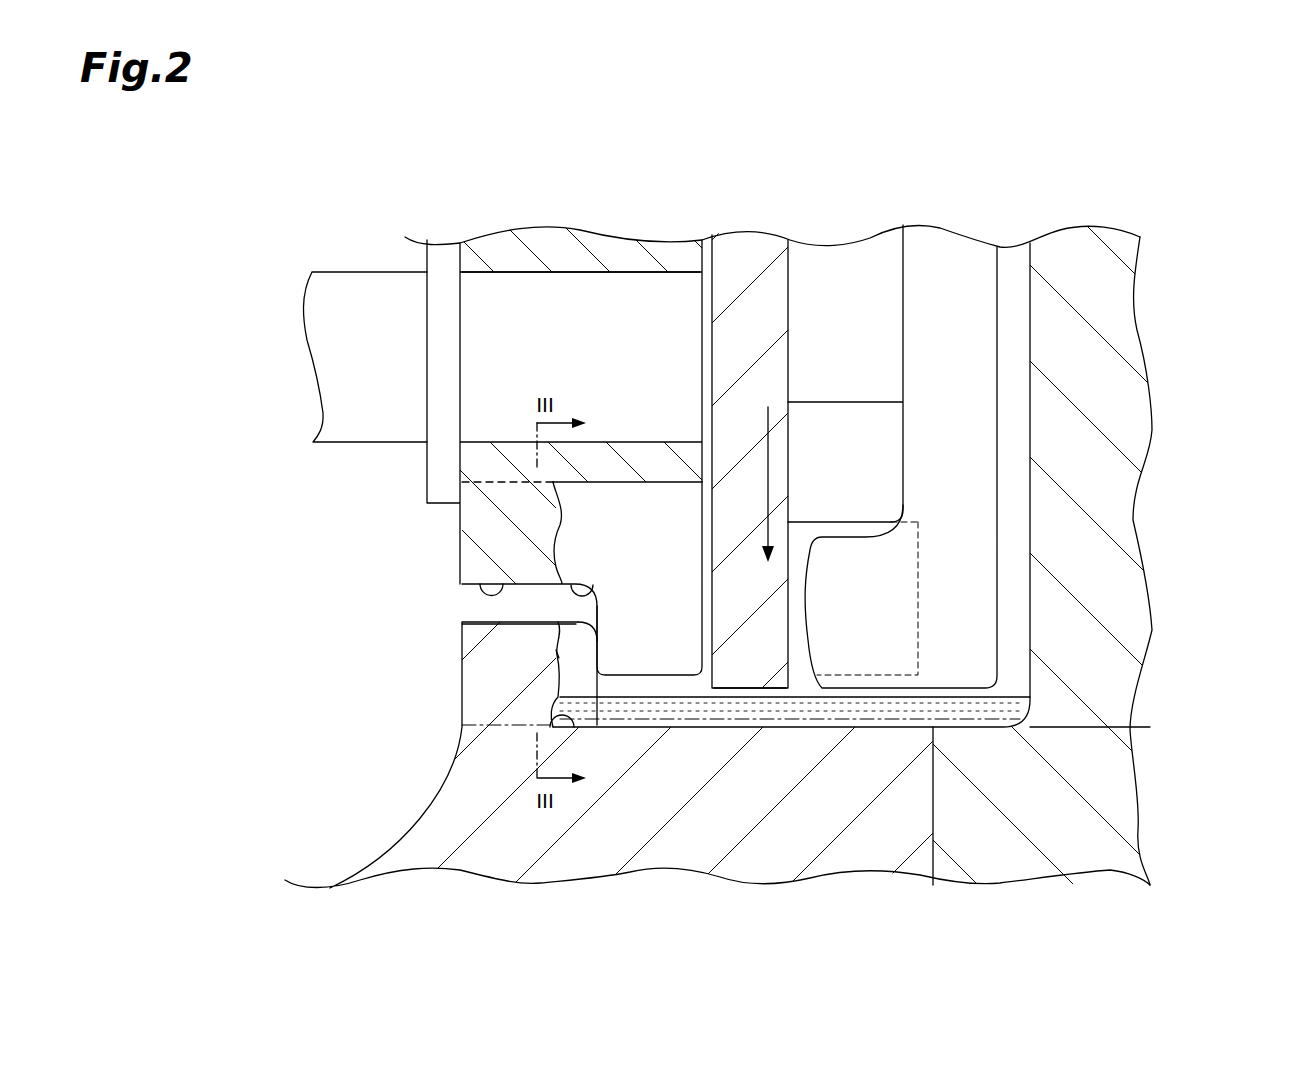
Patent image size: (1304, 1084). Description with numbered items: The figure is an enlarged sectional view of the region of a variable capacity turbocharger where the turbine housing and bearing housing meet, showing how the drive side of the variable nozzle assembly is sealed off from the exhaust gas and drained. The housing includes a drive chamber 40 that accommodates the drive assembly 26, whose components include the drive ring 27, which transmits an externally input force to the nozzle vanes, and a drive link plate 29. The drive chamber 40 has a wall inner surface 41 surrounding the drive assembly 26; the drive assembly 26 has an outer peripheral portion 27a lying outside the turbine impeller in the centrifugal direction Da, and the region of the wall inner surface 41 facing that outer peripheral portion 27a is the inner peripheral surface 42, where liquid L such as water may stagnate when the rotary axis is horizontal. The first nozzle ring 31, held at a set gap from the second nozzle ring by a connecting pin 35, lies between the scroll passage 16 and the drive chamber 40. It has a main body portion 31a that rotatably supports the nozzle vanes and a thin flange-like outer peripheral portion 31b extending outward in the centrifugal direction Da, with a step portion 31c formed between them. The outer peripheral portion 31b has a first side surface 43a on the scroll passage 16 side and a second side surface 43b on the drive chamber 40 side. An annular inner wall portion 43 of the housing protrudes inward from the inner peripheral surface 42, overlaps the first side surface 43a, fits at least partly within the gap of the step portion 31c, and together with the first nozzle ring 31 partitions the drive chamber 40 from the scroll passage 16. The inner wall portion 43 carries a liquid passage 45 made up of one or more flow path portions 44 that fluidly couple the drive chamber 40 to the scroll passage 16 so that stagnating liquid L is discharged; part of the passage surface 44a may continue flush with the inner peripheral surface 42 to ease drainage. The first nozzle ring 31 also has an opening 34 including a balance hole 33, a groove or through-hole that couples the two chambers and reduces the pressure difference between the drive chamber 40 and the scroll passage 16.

The scroll passage 16 is at (352, 782).
The drive assembly 26 is at (1003, 285).
The drive ring 27 is at (747, 270).
The outer peripheral portion 27a is at (747, 700).
The drive link plate 29 is at (972, 422).
The first nozzle ring 31 is at (486, 236).
The main body portion 31a is at (550, 247).
The outer peripheral portion 31b is at (643, 674).
The step portion 31c is at (479, 588).
The balance hole 33 is at (640, 500).
The opening 34 is at (655, 660).
The connecting pin 35 is at (362, 422).
The drive chamber 40 is at (1015, 508).
The wall inner surface 41 is at (1033, 538).
The inner peripheral surface 42 is at (848, 705).
The inner wall portion 43 is at (503, 642).
The first side surface 43a is at (582, 597).
The second side surface 43b is at (712, 619).
The flow path portion 44 is at (573, 670).
The passage surface 44a is at (560, 654).
The liquid passage 45 is at (550, 655).
The centrifugal direction Da is at (770, 450).
The liquid L is at (1035, 707).